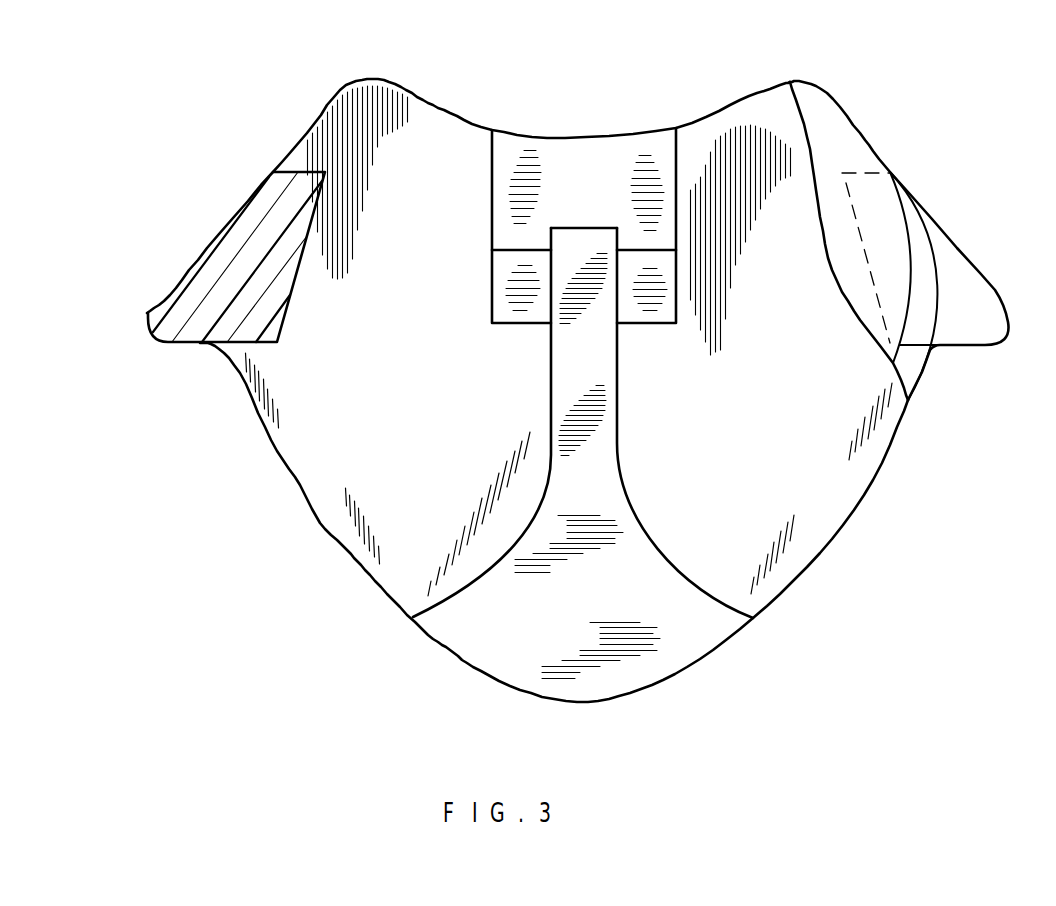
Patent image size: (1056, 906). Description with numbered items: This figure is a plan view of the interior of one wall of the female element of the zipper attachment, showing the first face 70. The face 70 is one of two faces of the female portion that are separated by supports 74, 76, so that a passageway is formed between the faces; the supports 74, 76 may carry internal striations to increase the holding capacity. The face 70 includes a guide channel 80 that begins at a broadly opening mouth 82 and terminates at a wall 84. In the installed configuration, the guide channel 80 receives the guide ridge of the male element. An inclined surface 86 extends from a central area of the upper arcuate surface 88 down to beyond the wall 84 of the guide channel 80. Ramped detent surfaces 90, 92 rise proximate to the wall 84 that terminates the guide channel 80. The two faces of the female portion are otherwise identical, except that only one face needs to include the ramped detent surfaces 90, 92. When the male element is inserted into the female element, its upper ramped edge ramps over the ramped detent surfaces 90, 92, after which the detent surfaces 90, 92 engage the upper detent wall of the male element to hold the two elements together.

The first face 70 is at (223, 607).
The support 74 is at (930, 235).
The support 76 is at (230, 213).
The guide channel 80 is at (577, 385).
The broadly opening mouth 82 is at (770, 750).
The wall 84 is at (580, 227).
The inclined surface 86 is at (510, 188).
The upper arcuate surface 88 is at (492, 62).
The ramped detent surface 90 is at (513, 285).
The ramped detent surface 92 is at (695, 385).